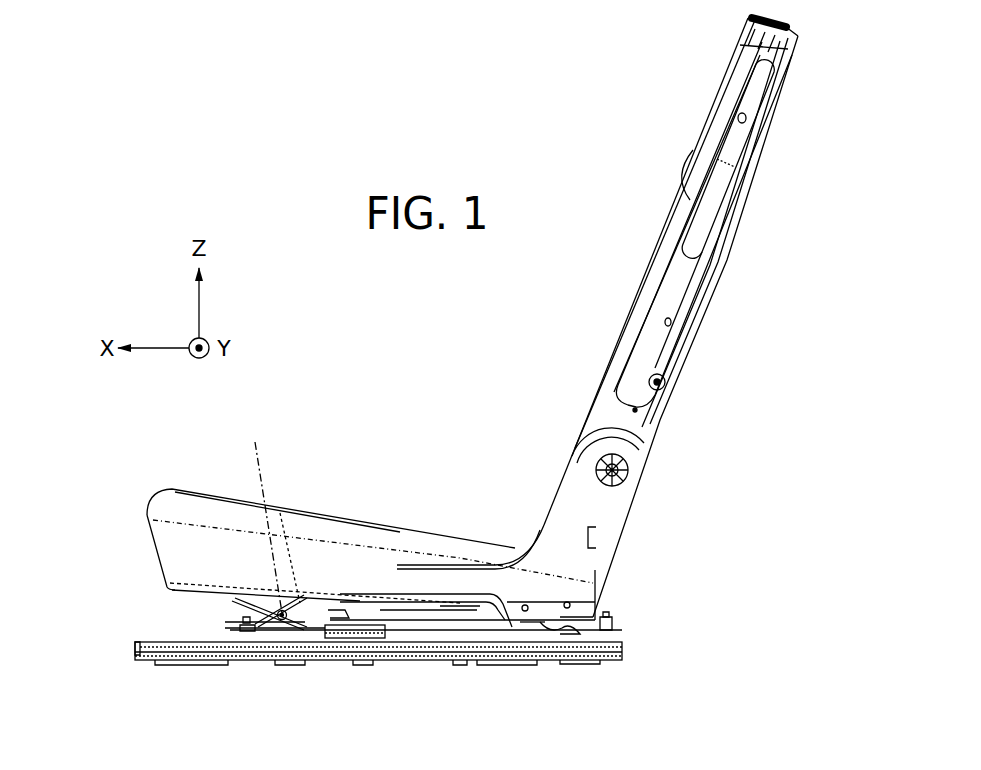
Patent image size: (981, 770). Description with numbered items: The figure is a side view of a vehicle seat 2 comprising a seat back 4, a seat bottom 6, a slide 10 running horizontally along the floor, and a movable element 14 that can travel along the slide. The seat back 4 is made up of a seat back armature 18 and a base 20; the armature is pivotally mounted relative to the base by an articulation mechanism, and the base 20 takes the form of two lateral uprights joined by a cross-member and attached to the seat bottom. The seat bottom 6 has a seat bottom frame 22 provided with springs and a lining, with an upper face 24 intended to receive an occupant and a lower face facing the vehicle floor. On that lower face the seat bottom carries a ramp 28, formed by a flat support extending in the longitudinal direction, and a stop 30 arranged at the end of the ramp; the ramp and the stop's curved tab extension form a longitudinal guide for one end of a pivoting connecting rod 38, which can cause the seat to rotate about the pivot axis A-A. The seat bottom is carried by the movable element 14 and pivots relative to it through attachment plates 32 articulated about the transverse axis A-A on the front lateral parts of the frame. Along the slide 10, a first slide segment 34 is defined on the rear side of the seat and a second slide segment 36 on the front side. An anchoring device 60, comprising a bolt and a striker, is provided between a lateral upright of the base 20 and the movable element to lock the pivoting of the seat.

The vehicle seat 2 is at (113, 598).
The seat back 4 is at (707, 308).
The seat bottom 6 is at (197, 503).
The slide 10 is at (618, 642).
The movable element 14 is at (308, 632).
The seat back armature 18 is at (647, 312).
The base 20 is at (567, 497).
The seat bottom frame 22 is at (150, 543).
The upper face 24 is at (335, 493).
The ramp 28 is at (412, 608).
The stop 30 is at (483, 610).
The attachment plate 32 is at (265, 600).
The first slide segment 34 is at (622, 680).
The second slide segment 36 is at (312, 680).
The pivoting connecting rod 38 is at (343, 610).
The anchoring device 60 is at (569, 637).